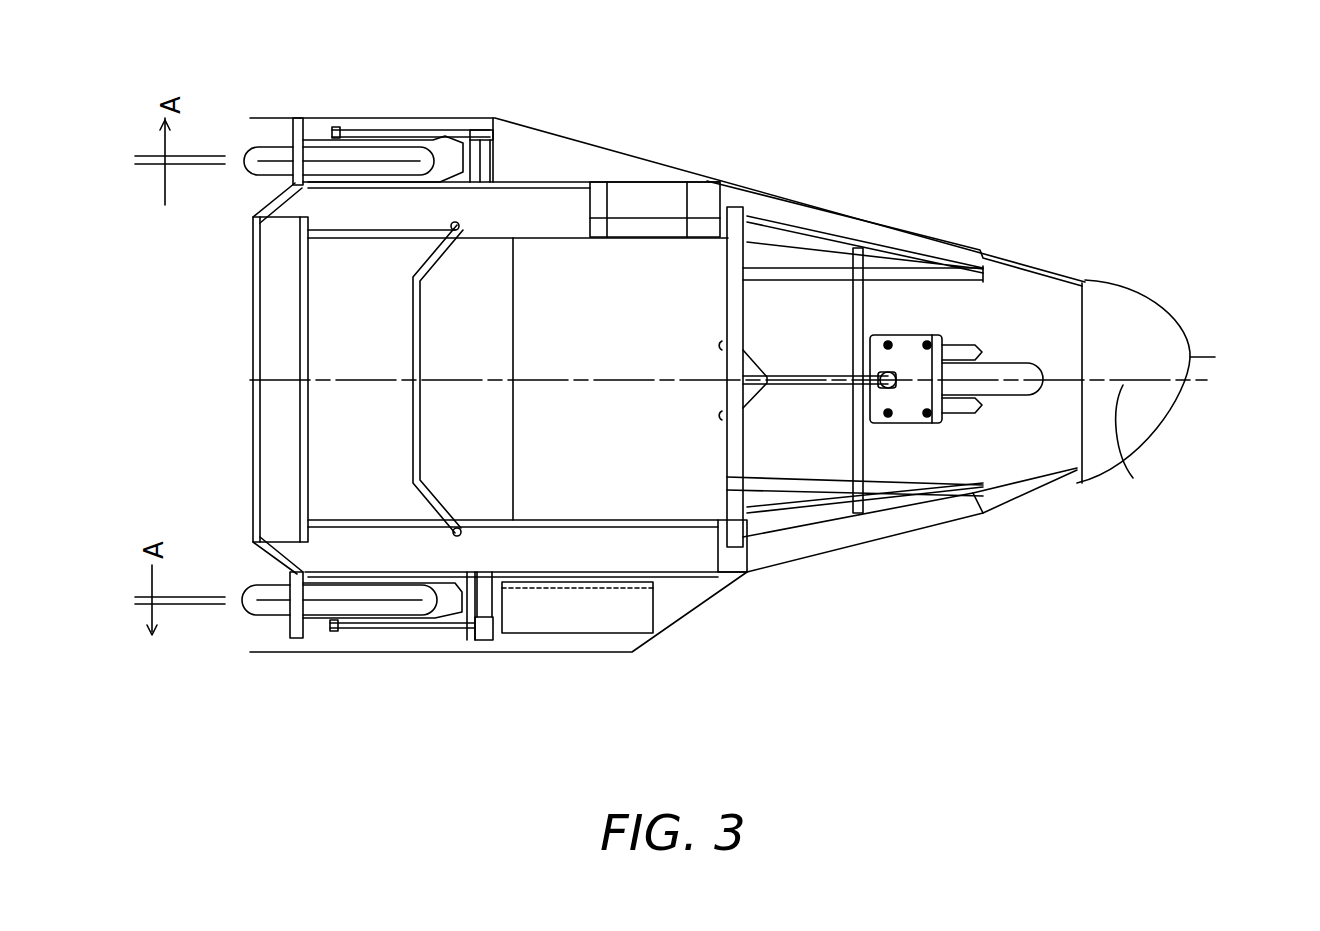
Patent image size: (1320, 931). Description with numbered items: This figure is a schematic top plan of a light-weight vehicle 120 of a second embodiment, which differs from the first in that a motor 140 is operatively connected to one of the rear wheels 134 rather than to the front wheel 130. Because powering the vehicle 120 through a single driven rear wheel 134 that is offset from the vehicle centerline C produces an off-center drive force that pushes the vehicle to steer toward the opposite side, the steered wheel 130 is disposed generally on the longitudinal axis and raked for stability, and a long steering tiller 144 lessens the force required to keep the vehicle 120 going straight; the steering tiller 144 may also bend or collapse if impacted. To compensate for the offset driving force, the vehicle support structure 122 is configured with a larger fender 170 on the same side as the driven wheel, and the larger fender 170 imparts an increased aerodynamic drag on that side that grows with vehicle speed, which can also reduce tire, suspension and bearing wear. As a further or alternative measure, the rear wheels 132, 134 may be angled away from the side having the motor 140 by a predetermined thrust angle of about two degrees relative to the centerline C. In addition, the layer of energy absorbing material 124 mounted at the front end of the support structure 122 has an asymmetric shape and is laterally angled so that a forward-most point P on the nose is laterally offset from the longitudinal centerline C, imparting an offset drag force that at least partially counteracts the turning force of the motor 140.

The light-weight vehicle 120 is at (968, 176).
The vehicle support structure 122 is at (692, 530).
The layer of energy absorbing material 124 is at (1152, 433).
The front steered wheel 130 is at (1020, 363).
The rear wheel 132 is at (374, 142).
The driven rear wheel 134 is at (323, 618).
The motor 140 is at (578, 633).
The steering tiller 144 is at (822, 386).
The larger fender 170 is at (467, 655).
The forward-most point P is at (1193, 355).
The vehicle centerline C is at (1137, 480).